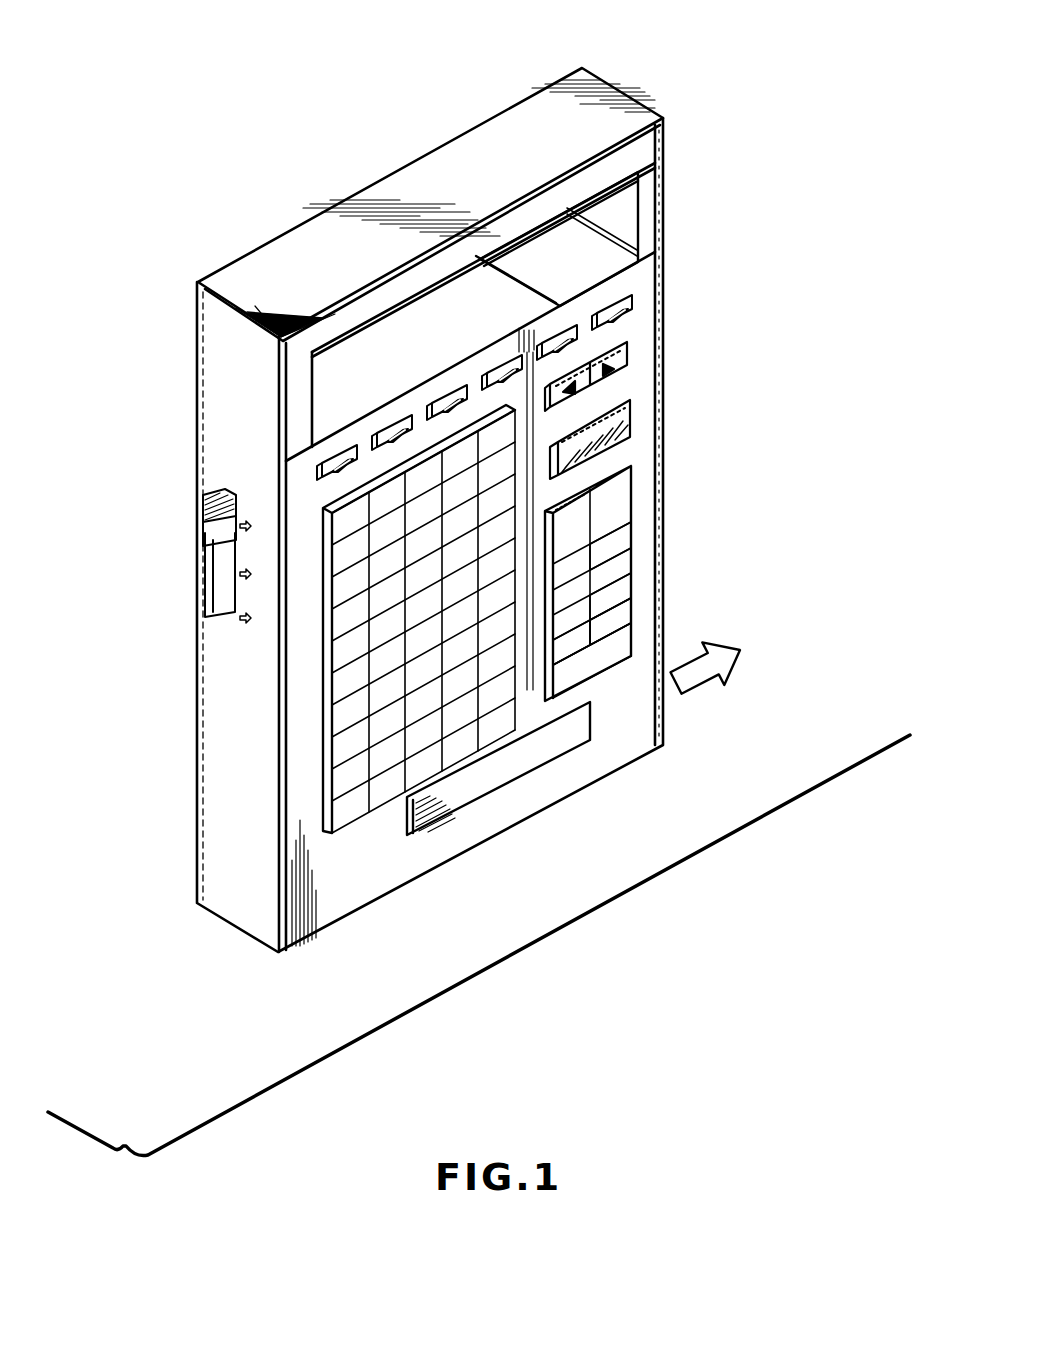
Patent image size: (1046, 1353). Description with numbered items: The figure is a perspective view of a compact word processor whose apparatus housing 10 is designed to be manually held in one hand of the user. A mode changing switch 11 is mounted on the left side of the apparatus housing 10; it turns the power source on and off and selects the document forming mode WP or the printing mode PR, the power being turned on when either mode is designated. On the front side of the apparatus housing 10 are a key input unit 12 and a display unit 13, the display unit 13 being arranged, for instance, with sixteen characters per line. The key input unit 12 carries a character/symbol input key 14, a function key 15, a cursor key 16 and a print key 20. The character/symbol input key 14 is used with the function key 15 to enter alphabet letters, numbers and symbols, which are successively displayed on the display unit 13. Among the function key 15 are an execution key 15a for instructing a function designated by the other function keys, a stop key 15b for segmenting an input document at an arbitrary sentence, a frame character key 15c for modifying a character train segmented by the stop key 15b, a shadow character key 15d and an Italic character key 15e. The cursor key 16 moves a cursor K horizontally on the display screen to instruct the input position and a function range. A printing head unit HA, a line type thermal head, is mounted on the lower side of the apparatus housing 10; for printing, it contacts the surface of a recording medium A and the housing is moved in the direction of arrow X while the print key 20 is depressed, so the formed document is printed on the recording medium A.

The apparatus housing 10 is at (495, 127).
The mode changing switch 11 is at (205, 508).
The key input unit 12 is at (655, 462).
The display unit 13 is at (638, 210).
The character/symbol input key 14 is at (338, 831).
The function key 15 is at (684, 631).
The execution key 15a is at (633, 640).
The stop key 15b is at (557, 683).
The frame character key 15c is at (631, 547).
The shadow character key 15d is at (631, 590).
The Italic character key 15e is at (631, 615).
The cursor key 16 is at (627, 357).
The print key 20 is at (455, 811).
The cursor K is at (320, 418).
The printing head unit HA is at (537, 809).
The recording medium A is at (435, 983).
The arrow X is at (718, 665).